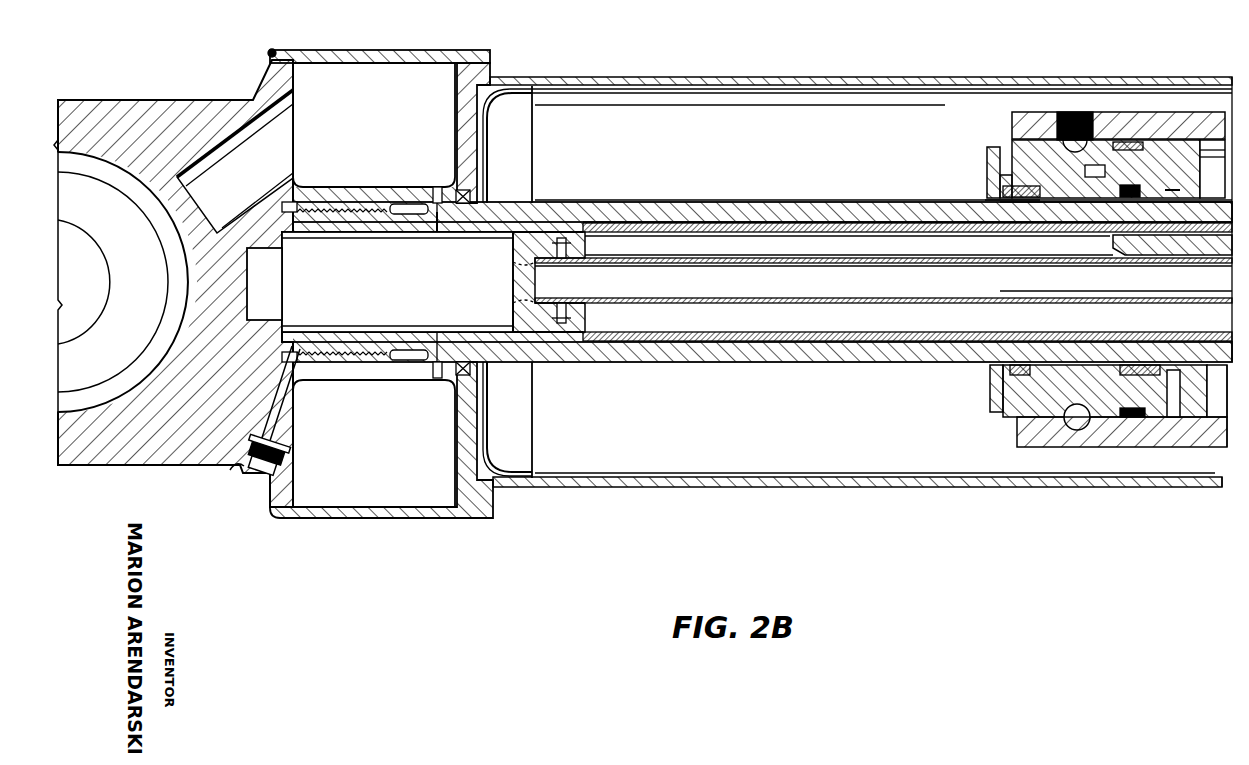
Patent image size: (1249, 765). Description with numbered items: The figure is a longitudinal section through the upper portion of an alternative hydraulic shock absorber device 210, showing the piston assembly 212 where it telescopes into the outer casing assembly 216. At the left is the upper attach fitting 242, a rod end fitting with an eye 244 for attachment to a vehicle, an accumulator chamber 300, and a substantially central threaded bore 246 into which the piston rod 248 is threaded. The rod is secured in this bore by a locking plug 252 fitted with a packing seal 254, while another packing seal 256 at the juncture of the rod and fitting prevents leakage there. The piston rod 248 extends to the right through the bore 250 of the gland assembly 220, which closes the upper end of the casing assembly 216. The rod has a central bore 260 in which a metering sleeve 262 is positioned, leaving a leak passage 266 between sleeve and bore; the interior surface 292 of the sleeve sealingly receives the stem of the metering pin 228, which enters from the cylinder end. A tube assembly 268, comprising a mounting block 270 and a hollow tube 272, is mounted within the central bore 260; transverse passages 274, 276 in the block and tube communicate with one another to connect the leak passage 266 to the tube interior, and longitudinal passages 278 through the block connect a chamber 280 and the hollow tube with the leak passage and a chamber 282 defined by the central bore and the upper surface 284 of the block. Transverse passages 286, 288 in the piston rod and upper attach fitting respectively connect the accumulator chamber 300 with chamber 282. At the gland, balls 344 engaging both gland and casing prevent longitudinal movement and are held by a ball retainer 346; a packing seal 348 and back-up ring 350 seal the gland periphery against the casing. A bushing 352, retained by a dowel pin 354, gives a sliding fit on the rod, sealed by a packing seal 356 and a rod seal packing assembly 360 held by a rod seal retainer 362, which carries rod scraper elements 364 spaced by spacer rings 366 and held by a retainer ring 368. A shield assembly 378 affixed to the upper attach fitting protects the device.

The hydraulic shock absorber device 210 is at (1052, 494).
The piston assembly 212 is at (750, 494).
The casing assembly 216 is at (1008, 118).
The gland assembly 220 is at (986, 420).
The metering pin 228 is at (1108, 243).
The upper attach fitting 242 is at (193, 100).
The eye 244 is at (158, 150).
The threaded bore 246 is at (320, 206).
The piston rod 248 is at (763, 200).
The bore 250 is at (1128, 406).
The locking plug 252 is at (258, 484).
The packing seal 254 is at (232, 466).
The packing seal 256 is at (484, 163).
The central bore 260 is at (664, 206).
The metering sleeve 262 is at (847, 234).
The leak passage 266 is at (842, 204).
The tube assembly 268 is at (778, 295).
The mounting block 270 is at (520, 286).
The hollow tube 272 is at (972, 291).
The transverse passage 274 is at (596, 248).
The transverse passage 276 is at (566, 272).
The longitudinal passages 278 is at (520, 264).
The chamber 280 is at (752, 254).
The chamber 282 is at (315, 282).
The upper surface 284 is at (522, 308).
The transverse passages 286 is at (432, 232).
The transverse passages 288 is at (430, 188).
The interior surface 292 is at (884, 330).
The accumulator chamber 300 is at (357, 114).
The balls 344 is at (1094, 434).
The ball retainer 346 is at (1090, 112).
The packing seal 348 is at (1120, 140).
The back-up ring 350 is at (1172, 141).
The bushing 352 is at (1150, 182).
The dowel pin 354 is at (1186, 425).
The packing seal 356 is at (1130, 186).
The rod seal packing assembly 360 is at (1060, 398).
The rod seal retainer 362 is at (986, 154).
The rod scraper elements 364 is at (1036, 206).
The spacer rings 366 is at (1002, 202).
The retainer ring 368 is at (1000, 192).
The shield assembly 378 is at (808, 76).